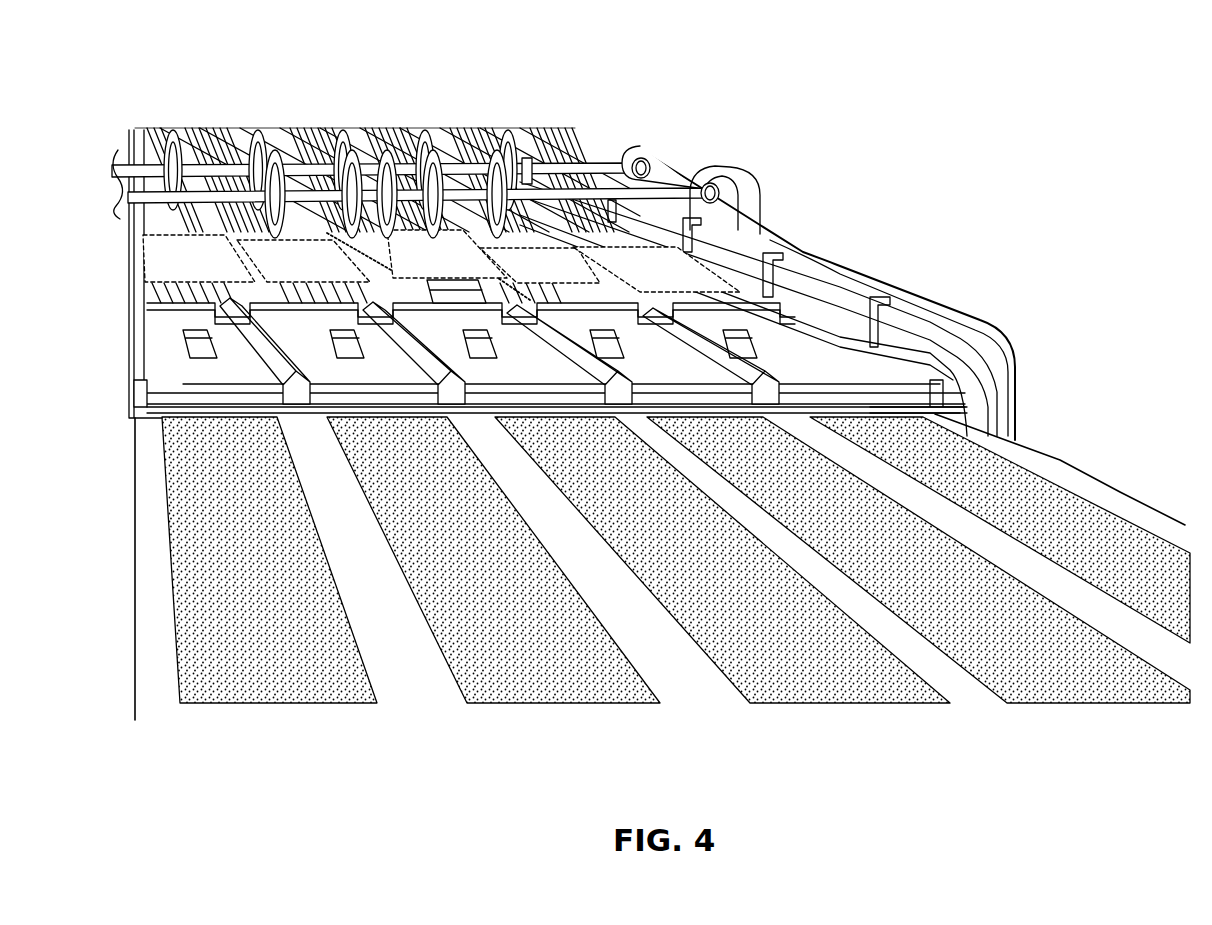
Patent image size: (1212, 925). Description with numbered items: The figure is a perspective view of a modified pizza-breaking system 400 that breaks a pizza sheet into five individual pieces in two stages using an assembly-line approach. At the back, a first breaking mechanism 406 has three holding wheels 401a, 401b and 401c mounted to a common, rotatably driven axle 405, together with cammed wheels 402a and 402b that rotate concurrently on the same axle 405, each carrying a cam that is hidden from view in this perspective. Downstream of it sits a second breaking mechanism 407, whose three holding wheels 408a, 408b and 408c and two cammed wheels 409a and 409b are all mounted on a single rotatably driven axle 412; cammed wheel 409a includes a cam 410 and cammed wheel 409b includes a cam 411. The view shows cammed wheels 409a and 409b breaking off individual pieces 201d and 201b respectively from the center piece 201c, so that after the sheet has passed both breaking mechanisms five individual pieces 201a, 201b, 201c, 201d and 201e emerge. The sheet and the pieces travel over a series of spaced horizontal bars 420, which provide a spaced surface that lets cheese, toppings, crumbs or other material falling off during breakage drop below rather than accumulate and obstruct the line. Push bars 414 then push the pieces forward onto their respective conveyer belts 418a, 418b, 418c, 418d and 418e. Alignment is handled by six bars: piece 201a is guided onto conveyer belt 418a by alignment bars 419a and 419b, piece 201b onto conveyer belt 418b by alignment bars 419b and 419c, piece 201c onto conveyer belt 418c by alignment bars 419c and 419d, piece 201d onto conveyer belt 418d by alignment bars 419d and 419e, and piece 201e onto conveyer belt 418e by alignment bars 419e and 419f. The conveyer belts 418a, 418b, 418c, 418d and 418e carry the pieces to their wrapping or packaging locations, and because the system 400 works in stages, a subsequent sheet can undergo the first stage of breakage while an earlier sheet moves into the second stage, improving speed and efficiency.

The system 400 is at (767, 126).
The axle 405 is at (133, 170).
The first breaking mechanism 406 is at (563, 156).
The second breaking mechanism 407 is at (663, 163).
The cam 410 is at (216, 130).
The cam 411 is at (527, 140).
The axle 412 is at (716, 170).
The push bars 414 is at (150, 318).
The spaced horizontal bars 420 is at (153, 290).
The holding wheel 401a is at (420, 128).
The holding wheel 401b is at (340, 128).
The holding wheel 401c is at (255, 128).
The cammed wheel 402a is at (170, 128).
The cammed wheel 402b is at (507, 128).
The holding wheel 408a is at (433, 148).
The holding wheel 408b is at (376, 148).
The holding wheel 408c is at (300, 148).
The cammed wheel 409a is at (275, 148).
The cammed wheel 409b is at (492, 148).
The individual piece 201a is at (675, 278).
The individual piece 201b is at (552, 276).
The center piece 201c is at (440, 268).
The individual piece 201d is at (327, 271).
The individual piece 201e is at (210, 268).
The alignment bar 419a is at (922, 382).
The alignment bar 419b is at (702, 338).
The alignment bar 419c is at (558, 340).
The alignment bar 419d is at (412, 340).
The alignment bar 419e is at (262, 345).
The alignment bar 419f is at (138, 380).
The conveyer belt 418a is at (1052, 513).
The conveyer belt 418b is at (859, 513).
The conveyer belt 418c is at (672, 513).
The conveyer belt 418d is at (467, 513).
The conveyer belt 418e is at (252, 513).